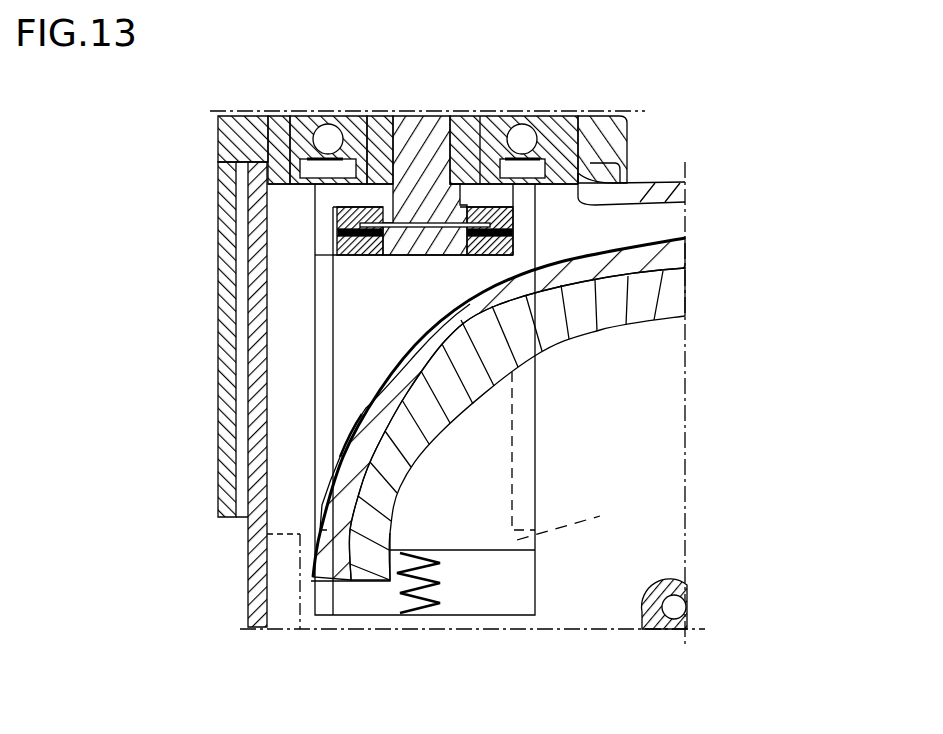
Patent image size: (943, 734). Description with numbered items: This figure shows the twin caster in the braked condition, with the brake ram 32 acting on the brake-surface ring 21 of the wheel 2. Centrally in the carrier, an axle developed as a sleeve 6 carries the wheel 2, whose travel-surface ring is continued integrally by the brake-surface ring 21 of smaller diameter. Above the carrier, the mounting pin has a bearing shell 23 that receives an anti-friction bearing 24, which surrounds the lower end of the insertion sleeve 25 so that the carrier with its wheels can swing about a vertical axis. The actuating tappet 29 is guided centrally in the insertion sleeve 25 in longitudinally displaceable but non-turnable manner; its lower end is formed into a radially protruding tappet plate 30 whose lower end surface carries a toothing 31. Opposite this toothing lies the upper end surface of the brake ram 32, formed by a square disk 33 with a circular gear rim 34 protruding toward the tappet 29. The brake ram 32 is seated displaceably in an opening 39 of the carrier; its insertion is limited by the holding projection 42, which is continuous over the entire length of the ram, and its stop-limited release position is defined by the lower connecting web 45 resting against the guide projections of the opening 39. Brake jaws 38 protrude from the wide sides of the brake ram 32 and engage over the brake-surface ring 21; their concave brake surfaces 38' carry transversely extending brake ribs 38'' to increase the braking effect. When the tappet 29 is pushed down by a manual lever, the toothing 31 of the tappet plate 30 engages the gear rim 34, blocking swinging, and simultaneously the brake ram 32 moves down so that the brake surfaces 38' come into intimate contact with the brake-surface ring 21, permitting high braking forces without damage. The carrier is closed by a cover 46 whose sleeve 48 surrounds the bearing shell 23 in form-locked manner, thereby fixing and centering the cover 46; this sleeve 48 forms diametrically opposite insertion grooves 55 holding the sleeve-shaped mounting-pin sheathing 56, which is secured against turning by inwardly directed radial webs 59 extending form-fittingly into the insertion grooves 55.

The wheel 2 is at (660, 257).
The sleeve 6 is at (657, 630).
The brake-surface ring 21 is at (686, 285).
The bearing shell 23 is at (277, 130).
The anti-friction bearing 24 is at (352, 114).
The insertion sleeve 25 is at (387, 114).
The actuating tappet 29 is at (442, 114).
The tappet plate 30 is at (382, 227).
The toothing 31 is at (336, 208).
The brake ram 32 is at (508, 411).
The square disk 33 is at (383, 255).
The circular gear rim 34 is at (340, 250).
The brake jaw 38 is at (267, 349).
The brake surface 38' is at (250, 453).
The brake rib 38'' is at (434, 313).
The opening 39 is at (517, 587).
The holding projection 42 is at (522, 390).
The connecting web 45 is at (600, 516).
The cover 46 is at (657, 155).
The sleeve 48 is at (650, 160).
The insertion groove 55 is at (596, 125).
The mounting-pin sheathing 56 is at (206, 468).
The radial web 59 is at (250, 135).